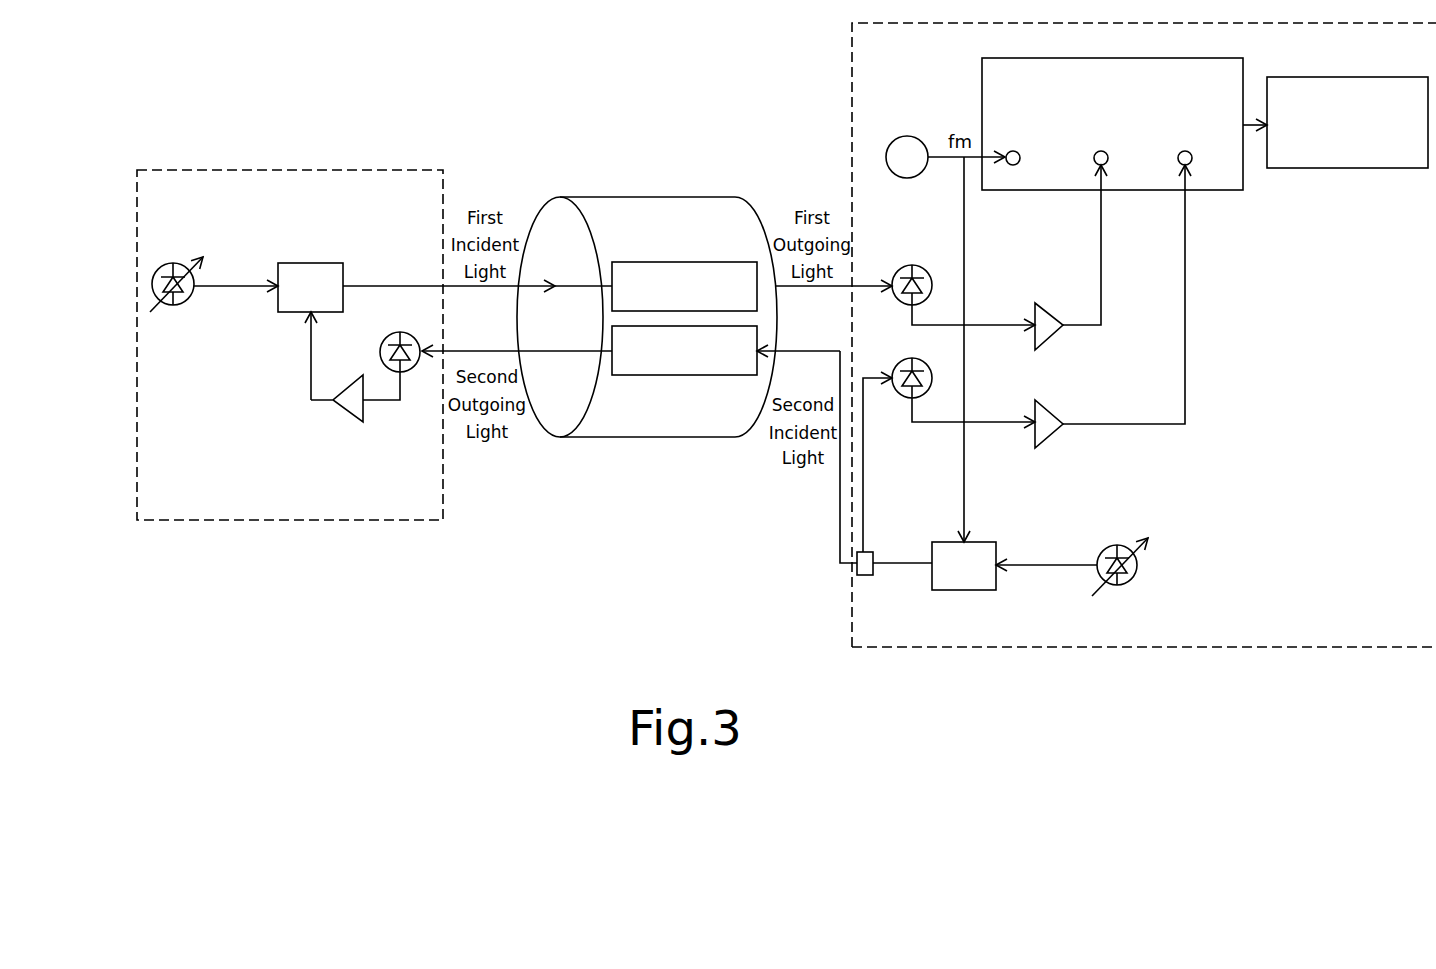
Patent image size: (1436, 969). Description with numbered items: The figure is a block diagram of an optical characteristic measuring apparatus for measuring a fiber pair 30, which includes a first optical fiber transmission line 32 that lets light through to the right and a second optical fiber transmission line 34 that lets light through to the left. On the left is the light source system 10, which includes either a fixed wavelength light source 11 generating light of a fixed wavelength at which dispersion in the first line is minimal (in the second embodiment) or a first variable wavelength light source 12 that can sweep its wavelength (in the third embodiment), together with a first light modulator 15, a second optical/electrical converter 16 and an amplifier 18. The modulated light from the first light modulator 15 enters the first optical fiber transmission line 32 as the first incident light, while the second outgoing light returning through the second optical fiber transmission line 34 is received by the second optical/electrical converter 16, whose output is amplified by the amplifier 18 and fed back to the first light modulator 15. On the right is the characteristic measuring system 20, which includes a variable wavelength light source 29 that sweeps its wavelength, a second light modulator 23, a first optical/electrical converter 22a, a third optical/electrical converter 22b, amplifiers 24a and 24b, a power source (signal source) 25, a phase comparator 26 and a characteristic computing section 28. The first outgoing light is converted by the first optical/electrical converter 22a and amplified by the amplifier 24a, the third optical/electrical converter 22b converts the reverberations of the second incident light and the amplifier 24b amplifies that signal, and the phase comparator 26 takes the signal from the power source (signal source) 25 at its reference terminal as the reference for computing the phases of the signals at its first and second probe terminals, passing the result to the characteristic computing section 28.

The light source system 10 is at (278, 520).
The fixed wavelength light source 11 is at (202, 248).
The first variable wavelength light source 12 is at (166, 262).
The first light modulator 15 is at (318, 263).
The second optical/electrical converter 16 is at (388, 337).
The amplifier 18 is at (345, 410).
The characteristic measuring system 20 is at (1098, 647).
The first optical/electrical converter 22a is at (918, 265).
The third optical/electrical converter 22b is at (900, 396).
The second light modulator 23 is at (960, 590).
The amplifier 24a is at (1055, 338).
The amplifier 24b is at (1055, 437).
The power source (signal source) 25 is at (918, 137).
The phase comparator 26 is at (1053, 190).
The characteristic computing section 28 is at (1323, 168).
The variable wavelength light source 29 is at (1140, 572).
The fiber pair 30 is at (703, 197).
The first optical fiber transmission line 32 is at (703, 262).
The second optical fiber transmission line 34 is at (680, 375).